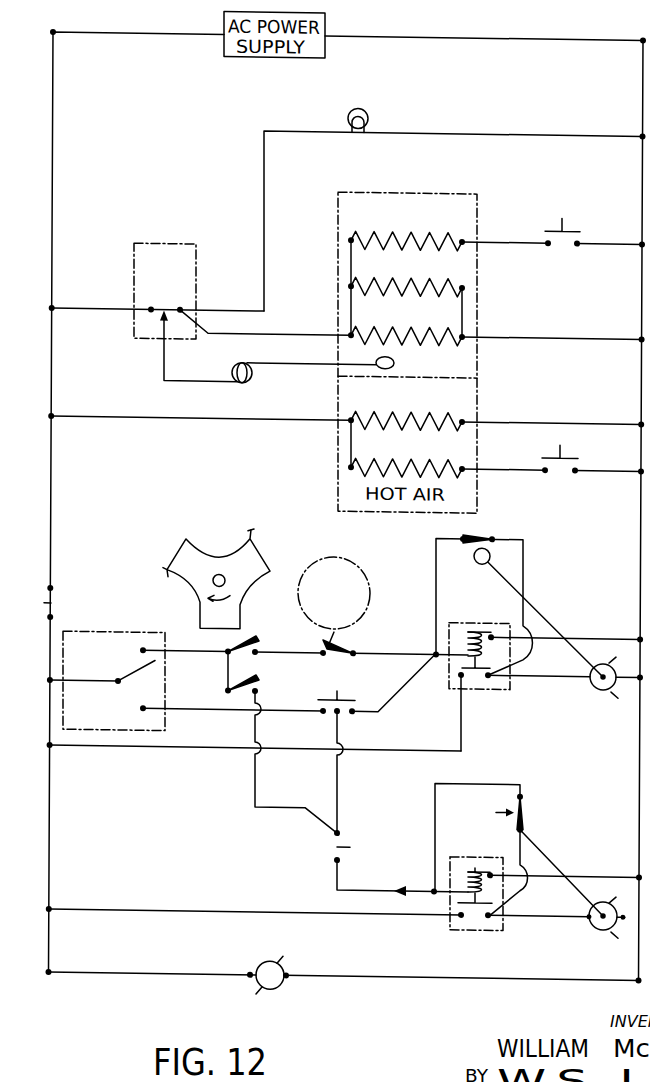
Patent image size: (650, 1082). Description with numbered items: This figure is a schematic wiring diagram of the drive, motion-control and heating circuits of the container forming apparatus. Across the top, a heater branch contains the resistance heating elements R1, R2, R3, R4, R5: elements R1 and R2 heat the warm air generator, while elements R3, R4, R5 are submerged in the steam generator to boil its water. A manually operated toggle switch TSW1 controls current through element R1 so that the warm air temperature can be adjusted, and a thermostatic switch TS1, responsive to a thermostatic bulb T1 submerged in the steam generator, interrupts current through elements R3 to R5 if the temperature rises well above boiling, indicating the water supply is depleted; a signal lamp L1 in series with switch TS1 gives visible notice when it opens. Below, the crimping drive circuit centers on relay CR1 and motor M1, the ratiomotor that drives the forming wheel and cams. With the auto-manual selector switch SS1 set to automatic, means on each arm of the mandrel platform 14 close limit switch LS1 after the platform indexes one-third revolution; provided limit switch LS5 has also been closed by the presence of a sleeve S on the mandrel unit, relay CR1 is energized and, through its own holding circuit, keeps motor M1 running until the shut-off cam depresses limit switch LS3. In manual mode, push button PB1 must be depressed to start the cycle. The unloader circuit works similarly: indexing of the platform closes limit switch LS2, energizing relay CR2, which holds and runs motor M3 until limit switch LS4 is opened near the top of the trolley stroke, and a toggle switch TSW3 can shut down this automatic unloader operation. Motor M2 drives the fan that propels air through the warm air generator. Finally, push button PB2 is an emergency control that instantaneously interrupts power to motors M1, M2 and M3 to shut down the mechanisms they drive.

The mandrel platform 14 is at (261, 552).
The sleeve S is at (368, 581).
The signal lamp L1 is at (373, 99).
The thermostatic bulb T1 is at (419, 358).
The thermostatic switch TS1 is at (214, 313).
The toggle switch TSW1 is at (552, 357).
The toggle switch TSW3 is at (349, 863).
The resistance heating element R1 is at (406, 454).
The resistance heating element R2 is at (346, 423).
The resistance heating element R3 is at (495, 322).
The resistance heating element R4 is at (406, 292).
The resistance heating element R5 is at (406, 267).
The push button PB1 is at (376, 744).
The push button PB2 is at (25, 603).
The auto-manual selector switch SS1 is at (186, 666).
The limit switch LS1 is at (274, 660).
The limit switch LS2 is at (281, 752).
The limit switch LS3 is at (531, 597).
The limit switch LS4 is at (549, 854).
The limit switch LS5 is at (394, 644).
The relay CR1 is at (538, 646).
The relay CR2 is at (344, 858).
The motor M1 is at (600, 695).
The motor M2 is at (344, 1001).
The motor M3 is at (600, 934).